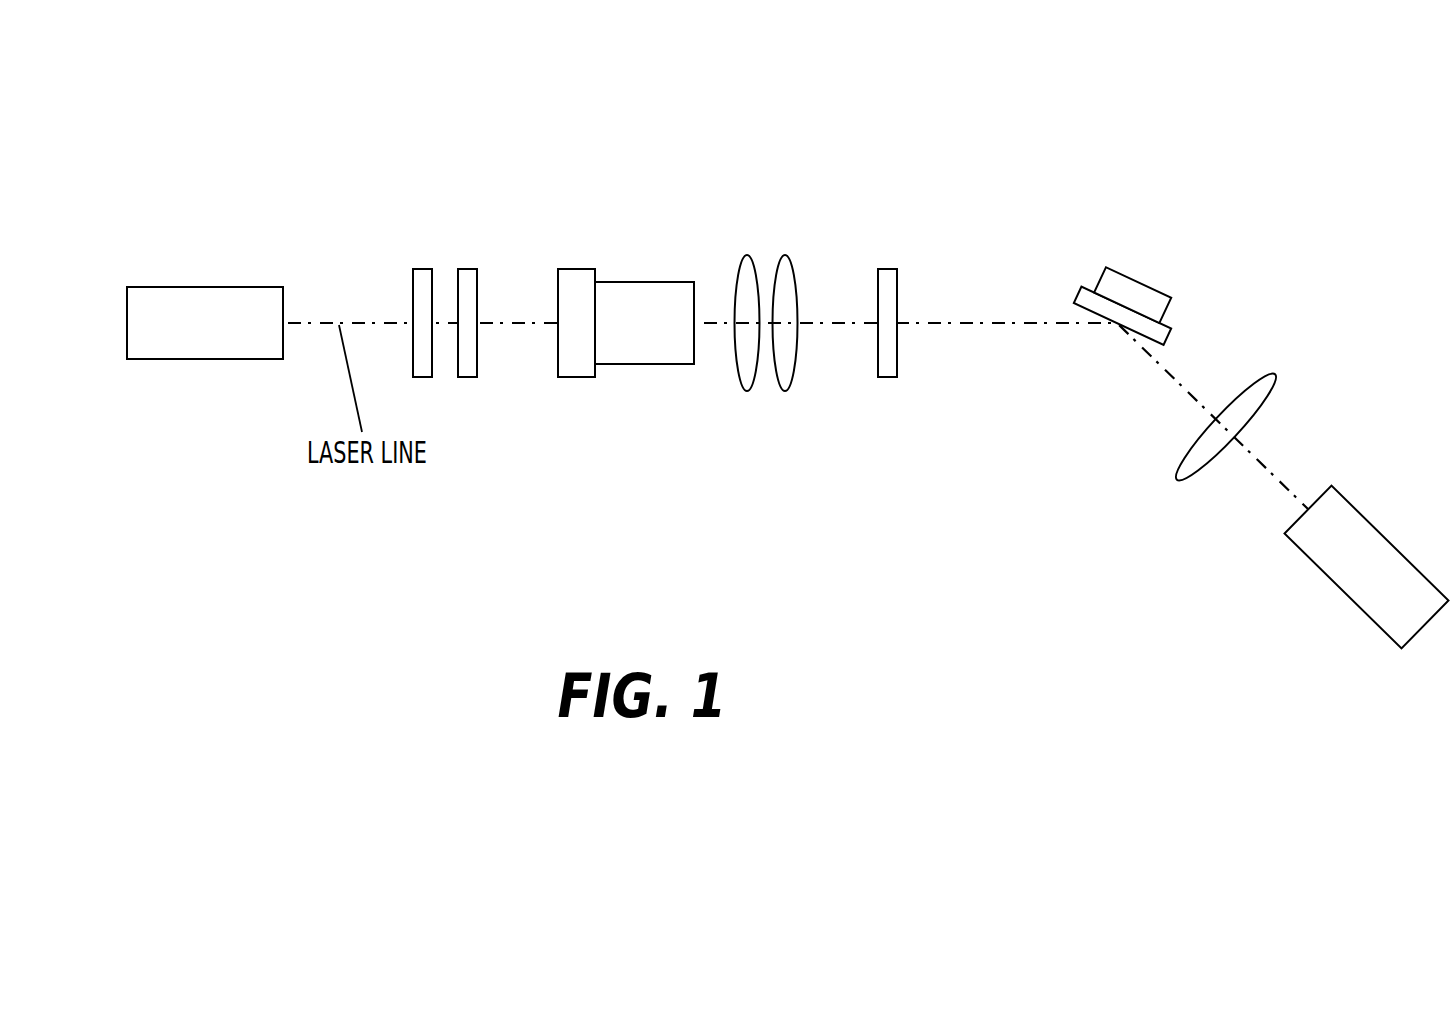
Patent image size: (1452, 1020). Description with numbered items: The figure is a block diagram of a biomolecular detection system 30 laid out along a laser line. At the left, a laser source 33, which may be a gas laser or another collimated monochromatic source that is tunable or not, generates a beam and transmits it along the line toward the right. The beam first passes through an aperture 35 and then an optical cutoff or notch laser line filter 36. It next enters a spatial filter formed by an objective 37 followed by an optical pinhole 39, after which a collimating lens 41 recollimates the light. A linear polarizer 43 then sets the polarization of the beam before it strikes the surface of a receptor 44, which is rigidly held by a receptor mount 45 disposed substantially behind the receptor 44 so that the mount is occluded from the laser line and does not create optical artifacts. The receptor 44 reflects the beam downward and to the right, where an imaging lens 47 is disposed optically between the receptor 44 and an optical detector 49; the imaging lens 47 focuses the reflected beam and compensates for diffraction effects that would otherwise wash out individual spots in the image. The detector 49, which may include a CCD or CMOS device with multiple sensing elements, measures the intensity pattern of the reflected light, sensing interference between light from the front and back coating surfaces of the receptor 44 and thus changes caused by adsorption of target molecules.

The biomolecular detection system 30 is at (628, 100).
The laser source 33 is at (205, 287).
The aperture 35 is at (421, 269).
The laser line filter 36 is at (468, 269).
The objective 37 is at (574, 269).
The optical pinhole 39 is at (748, 255).
The collimating lens 41 is at (785, 255).
The linear polarizer 43 is at (887, 269).
The receptor 44 is at (1075, 291).
The receptor mount 45 is at (1140, 278).
The imaging lens 47 is at (1178, 478).
The optical detector 49 is at (1338, 589).